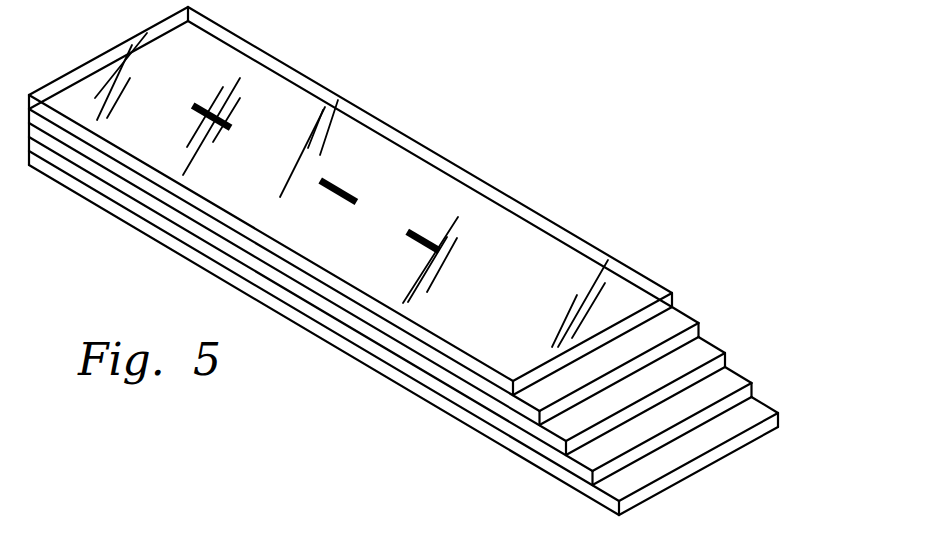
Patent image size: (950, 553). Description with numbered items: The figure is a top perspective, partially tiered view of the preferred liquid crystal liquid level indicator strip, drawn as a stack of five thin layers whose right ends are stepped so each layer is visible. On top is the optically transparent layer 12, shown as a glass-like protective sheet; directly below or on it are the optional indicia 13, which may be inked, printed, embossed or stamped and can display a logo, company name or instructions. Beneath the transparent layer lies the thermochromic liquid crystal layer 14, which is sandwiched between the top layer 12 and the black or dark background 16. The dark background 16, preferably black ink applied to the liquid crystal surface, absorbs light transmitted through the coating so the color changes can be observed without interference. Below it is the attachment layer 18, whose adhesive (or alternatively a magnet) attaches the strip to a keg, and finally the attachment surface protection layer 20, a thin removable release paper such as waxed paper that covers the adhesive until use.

The top optically transparent layer 12 is at (425, 146).
The indicia 13 is at (480, 260).
The thermochromic liquid crystal layer 14 is at (657, 328).
The black or dark background layer 16 is at (708, 352).
The attachment layer 18 is at (592, 457).
The attachment surface protection layer 20 is at (748, 413).